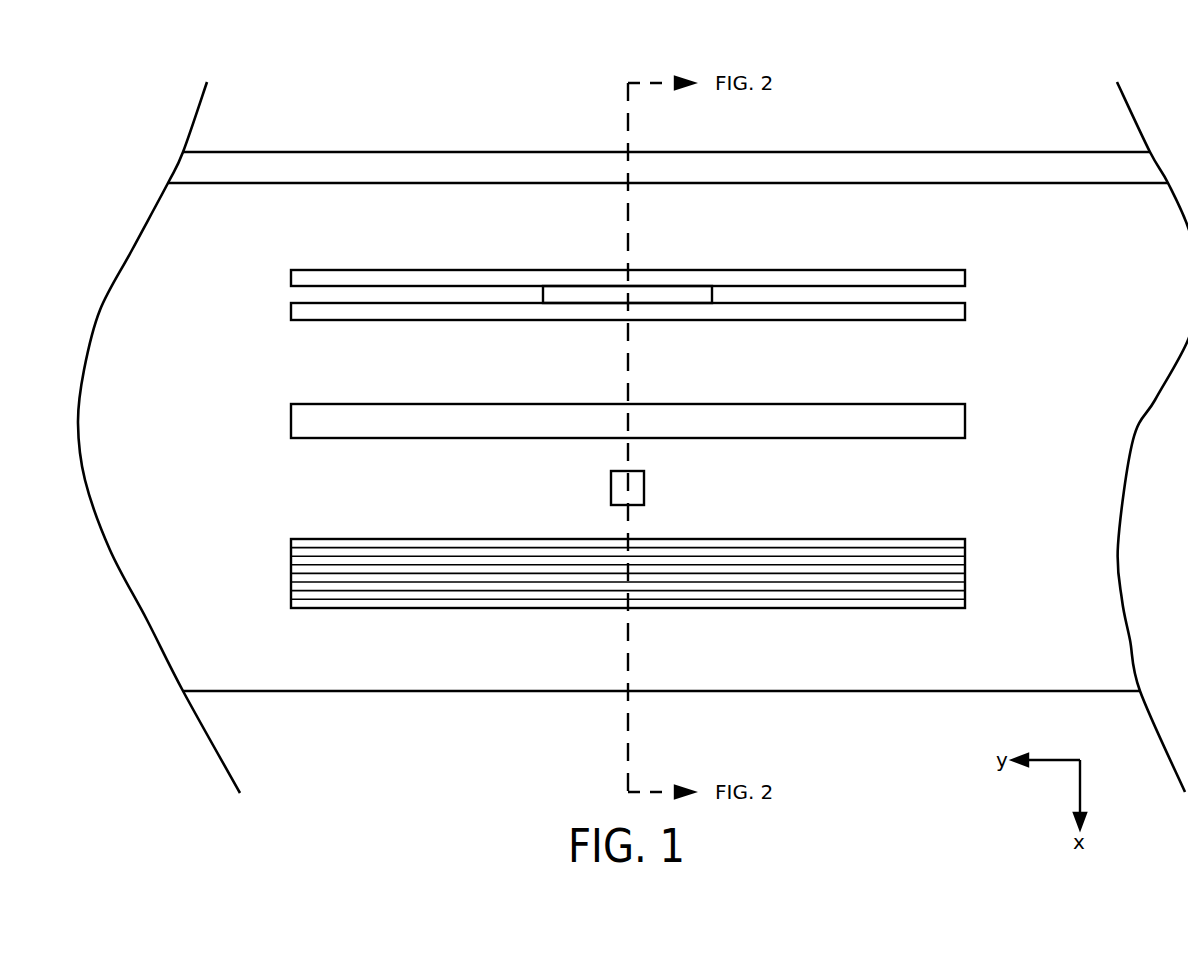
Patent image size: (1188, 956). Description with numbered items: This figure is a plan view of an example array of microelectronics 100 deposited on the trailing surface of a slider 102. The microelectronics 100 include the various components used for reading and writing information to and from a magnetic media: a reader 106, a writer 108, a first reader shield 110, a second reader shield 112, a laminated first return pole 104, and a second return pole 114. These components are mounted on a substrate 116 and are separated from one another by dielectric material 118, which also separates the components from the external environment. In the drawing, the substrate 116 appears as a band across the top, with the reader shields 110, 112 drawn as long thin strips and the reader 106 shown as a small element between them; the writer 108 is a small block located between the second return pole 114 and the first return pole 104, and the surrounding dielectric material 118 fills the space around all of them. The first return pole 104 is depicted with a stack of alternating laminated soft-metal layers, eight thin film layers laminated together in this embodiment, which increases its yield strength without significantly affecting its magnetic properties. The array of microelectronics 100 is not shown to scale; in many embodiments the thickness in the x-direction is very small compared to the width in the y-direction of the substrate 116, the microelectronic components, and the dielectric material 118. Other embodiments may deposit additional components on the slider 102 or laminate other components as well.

The array of microelectronics 100 is at (190, 254).
The slider 102 is at (578, 121).
The first return pole 104 is at (965, 569).
The reader 106 is at (634, 305).
The writer 108 is at (644, 488).
The first reader shield 110 is at (965, 271).
The second reader shield 112 is at (965, 309).
The second return pole 114 is at (965, 419).
The substrate 116 is at (578, 181).
The dielectric material 118 is at (199, 432).